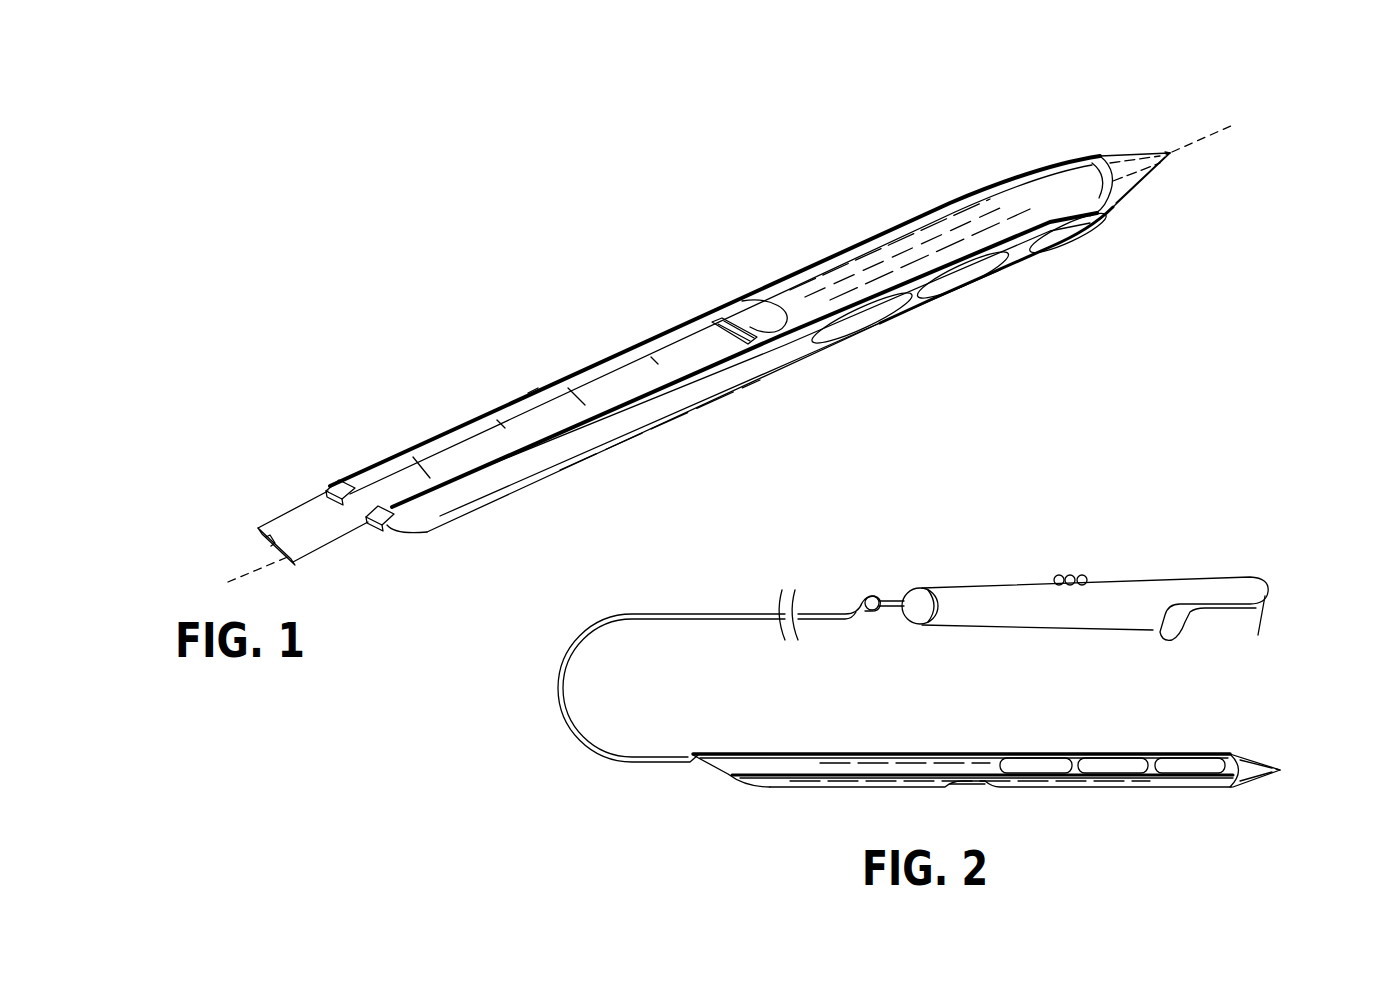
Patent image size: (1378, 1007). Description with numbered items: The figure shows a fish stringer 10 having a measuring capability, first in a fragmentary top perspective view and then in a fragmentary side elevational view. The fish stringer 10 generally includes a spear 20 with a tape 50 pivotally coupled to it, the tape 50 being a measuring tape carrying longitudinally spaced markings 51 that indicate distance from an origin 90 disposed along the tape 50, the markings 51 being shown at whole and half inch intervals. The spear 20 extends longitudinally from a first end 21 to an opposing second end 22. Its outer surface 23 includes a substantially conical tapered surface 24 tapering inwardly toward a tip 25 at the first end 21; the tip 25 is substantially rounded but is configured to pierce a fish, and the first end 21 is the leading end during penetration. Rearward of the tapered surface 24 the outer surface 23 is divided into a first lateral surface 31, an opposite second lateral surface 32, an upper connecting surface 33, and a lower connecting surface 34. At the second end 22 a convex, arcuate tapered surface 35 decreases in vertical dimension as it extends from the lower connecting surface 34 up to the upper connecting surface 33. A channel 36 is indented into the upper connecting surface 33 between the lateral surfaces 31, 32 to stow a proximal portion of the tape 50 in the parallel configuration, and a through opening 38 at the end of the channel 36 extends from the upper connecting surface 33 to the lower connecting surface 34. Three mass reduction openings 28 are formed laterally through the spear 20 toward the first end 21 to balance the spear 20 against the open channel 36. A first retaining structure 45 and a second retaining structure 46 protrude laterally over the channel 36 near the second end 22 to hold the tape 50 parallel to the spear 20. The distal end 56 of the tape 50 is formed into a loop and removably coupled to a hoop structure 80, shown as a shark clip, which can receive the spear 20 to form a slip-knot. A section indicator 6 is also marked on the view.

In FIG. 1, the section line for FIG. 6 is at (228, 582).
In FIG. 1, the fish stringer 10 is at (445, 275).
In FIG. 2, the fish stringer 10 is at (925, 728).
In FIG. 1, the spear 20 is at (790, 248).
In FIG. 2, the spear 20 is at (790, 745).
In FIG. 1, the first end 21 is at (1170, 153).
In FIG. 2, the first end 21 is at (1283, 770).
In FIG. 1, the second end 22 is at (325, 490).
In FIG. 2, the second end 22 is at (693, 755).
In FIG. 1, the outer surface 23 is at (858, 263).
In FIG. 1, the tapered surface 24 is at (1146, 178).
In FIG. 2, the tapered surface 24 is at (1250, 765).
In FIG. 1, the tip 25 is at (1213, 188).
In FIG. 2, the tip 25 is at (1307, 750).
In FIG. 1, the mass reduction openings 28 is at (847, 324).
In FIG. 1, the first lateral surface 31 is at (653, 357).
In FIG. 1, the second lateral surface 32 is at (713, 388).
In FIG. 1, the upper connecting surface 33 is at (835, 270).
In FIG. 2, the upper connecting surface 33 is at (1062, 752).
In FIG. 1, the lower connecting surface 34 is at (682, 420).
In FIG. 2, the lower connecting surface 34 is at (1070, 793).
In FIG. 1, the tapered surface 35 is at (428, 530).
In FIG. 2, the tapered surface 35 is at (725, 782).
In FIG. 1, the channel 36 is at (533, 393).
In FIG. 1, the through opening 38 is at (745, 312).
In FIG. 2, the through opening 38 is at (975, 786).
In FIG. 1, the first retaining structure 45 is at (347, 480).
In FIG. 1, the second retaining structure 46 is at (387, 532).
In FIG. 1, the tape 50 is at (478, 446).
In FIG. 2, the tape 50 is at (678, 610).
In FIG. 1, the markings 51 is at (570, 388).
In FIG. 2, the distal end 56 is at (875, 597).
In FIG. 2, the hoop structure 80 is at (1265, 565).
In FIG. 1, the origin 90 is at (725, 325).